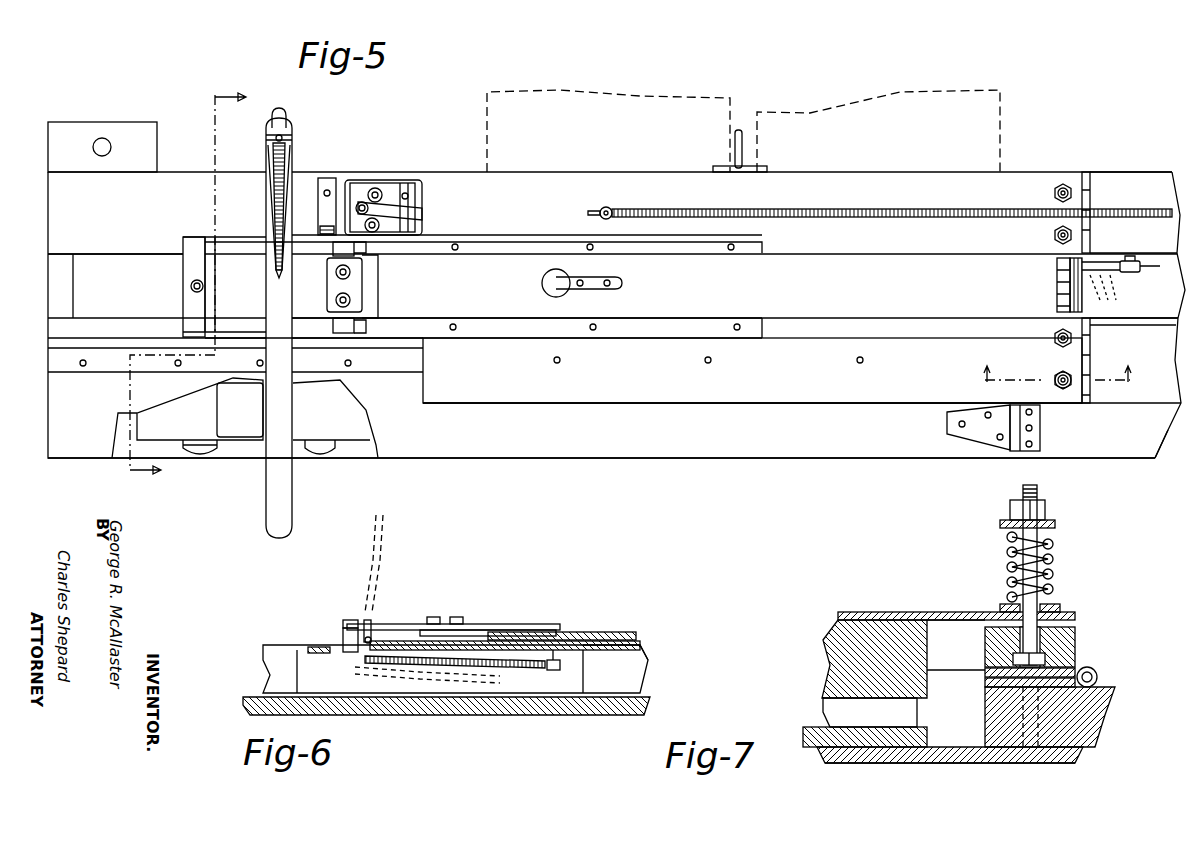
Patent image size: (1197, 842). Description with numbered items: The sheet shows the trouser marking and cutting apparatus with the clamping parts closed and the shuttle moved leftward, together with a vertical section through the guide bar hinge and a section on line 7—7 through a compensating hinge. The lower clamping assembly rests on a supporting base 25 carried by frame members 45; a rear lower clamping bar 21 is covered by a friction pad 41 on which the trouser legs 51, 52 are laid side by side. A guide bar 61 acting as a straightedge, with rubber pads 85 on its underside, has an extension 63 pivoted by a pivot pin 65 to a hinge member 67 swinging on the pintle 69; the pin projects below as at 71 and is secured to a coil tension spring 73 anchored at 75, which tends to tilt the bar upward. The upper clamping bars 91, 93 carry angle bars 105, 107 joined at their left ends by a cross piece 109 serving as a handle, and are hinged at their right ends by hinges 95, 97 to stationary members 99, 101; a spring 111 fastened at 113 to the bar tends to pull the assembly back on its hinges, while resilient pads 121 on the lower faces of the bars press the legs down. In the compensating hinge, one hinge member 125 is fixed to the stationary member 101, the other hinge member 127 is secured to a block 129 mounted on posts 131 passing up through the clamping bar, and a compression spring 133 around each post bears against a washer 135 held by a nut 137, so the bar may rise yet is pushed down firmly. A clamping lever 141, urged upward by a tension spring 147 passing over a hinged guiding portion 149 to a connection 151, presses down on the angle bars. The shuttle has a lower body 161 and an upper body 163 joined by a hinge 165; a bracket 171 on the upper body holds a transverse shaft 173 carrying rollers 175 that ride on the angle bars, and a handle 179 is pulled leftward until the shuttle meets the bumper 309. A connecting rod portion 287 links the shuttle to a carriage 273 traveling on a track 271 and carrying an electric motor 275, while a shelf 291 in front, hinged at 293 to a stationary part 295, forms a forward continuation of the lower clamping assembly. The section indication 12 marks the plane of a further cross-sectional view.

In FIG. 5, the supporting base 25 is at (56, 284).
In FIG. 6, the supporting base 25 is at (614, 708).
In FIG. 5, the supporting brackets 45 is at (89, 128).
In FIG. 5, the lower shuttle body 161 is at (88, 263).
In FIG. 5, the section line 12- 12 is at (182, 292).
In FIG. 5, the cross piece 109 is at (183, 276).
In FIG. 5, the bumper 309 is at (213, 278).
In FIG. 5, the clamping lever 141 is at (268, 510).
In FIG. 5, the coiled tension spring 147 is at (288, 116).
In FIG. 5, the hinged guiding portion 149 is at (293, 134).
In FIG. 5, the connection 151 is at (276, 272).
In FIG. 5, the hinge member 67 is at (366, 185).
In FIG. 6, the hinge member 67 is at (348, 652).
In FIG. 5, the hinge pivot 69 is at (396, 190).
In FIG. 6, the hinge pivot 69 is at (369, 630).
In FIG. 5, the extension 63 is at (410, 213).
In FIG. 6, the extension 63 is at (398, 624).
In FIG. 5, the upper clamping bar 91 is at (532, 172).
In FIG. 5, the angle bar 105 is at (477, 240).
In FIG. 5, the upper shuttle body 163 is at (873, 258).
In FIG. 5, the angle bar 107 is at (508, 345).
In FIG. 5, the upper clamping bar 93 is at (627, 394).
In FIG. 7, the upper clamping bar 93 is at (840, 645).
In FIG. 5, the spring attachment 113 is at (603, 208).
In FIG. 5, the spring 111 is at (880, 209).
In FIG. 5, the trouser leg 52 is at (596, 100).
In FIG. 6, the trouser leg 52 is at (590, 632).
In FIG. 5, the trouser leg 51 is at (905, 100).
In FIG. 5, the hinge 95 is at (1092, 182).
In FIG. 5, the stationary member 99 is at (1140, 182).
In FIG. 5, the hinge 165 is at (1057, 283).
In FIG. 5, the connecting rod portion 287 is at (1132, 274).
In FIG. 5, the bracket 171 is at (363, 285).
In FIG. 5, the transverse shaft 173 is at (363, 311).
In FIG. 5, the rollers 175 is at (375, 262).
In FIG. 5, the handle 179 is at (541, 287).
In FIG. 5, the nut 137 is at (1054, 340).
In FIG. 7, the nut 137 is at (1043, 510).
In FIG. 5, the posts 131 is at (1056, 374).
In FIG. 7, the posts 131 is at (1023, 560).
In FIG. 5, the section line 7— 7 is at (1055, 381).
In FIG. 5, the hinge 97 is at (1092, 398).
In FIG. 7, the hinge 97 is at (1094, 670).
In FIG. 5, the stationary member 101 is at (1142, 418).
In FIG. 7, the stationary member 101 is at (1103, 735).
In FIG. 5, the shelf 291 is at (811, 459).
In FIG. 7, the shelf 291 is at (888, 764).
In FIG. 5, the hinge 293 is at (992, 452).
In FIG. 5, the stationary part 295 is at (1131, 462).
In FIG. 7, the stationary part 295 is at (1060, 755).
In FIG. 5, the electric motor 275 is at (232, 412).
In FIG. 5, the carriage 273 is at (212, 452).
In FIG. 5, the track 271 is at (362, 456).
In FIG. 6, the lower clamping bar 21 is at (640, 666).
In FIG. 6, the friction pad 41 is at (641, 645).
In FIG. 7, the friction pad 41 is at (928, 733).
In FIG. 6, the guide bar 61 is at (388, 530).
In FIG. 6, the rubber pads 85 is at (505, 630).
In FIG. 6, the pivot pin 65 is at (343, 635).
In FIG. 6, the pin projection 71 is at (360, 666).
In FIG. 6, the coil tension spring 73 is at (488, 666).
In FIG. 6, the spring anchor 75 is at (557, 668).
In FIG. 7, the hinge member 127 is at (958, 668).
In FIG. 7, the block 129 is at (1076, 640).
In FIG. 7, the hinge member 125 is at (985, 680).
In FIG. 7, the resilient pads 121 is at (838, 706).
In FIG. 7, the washer 135 is at (1057, 524).
In FIG. 7, the compression spring 133 is at (1053, 580).